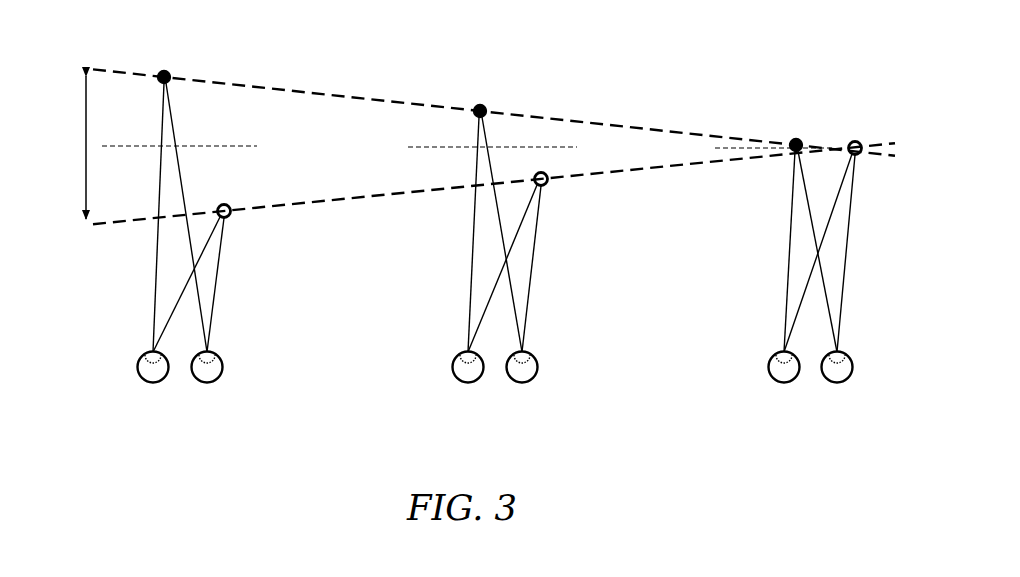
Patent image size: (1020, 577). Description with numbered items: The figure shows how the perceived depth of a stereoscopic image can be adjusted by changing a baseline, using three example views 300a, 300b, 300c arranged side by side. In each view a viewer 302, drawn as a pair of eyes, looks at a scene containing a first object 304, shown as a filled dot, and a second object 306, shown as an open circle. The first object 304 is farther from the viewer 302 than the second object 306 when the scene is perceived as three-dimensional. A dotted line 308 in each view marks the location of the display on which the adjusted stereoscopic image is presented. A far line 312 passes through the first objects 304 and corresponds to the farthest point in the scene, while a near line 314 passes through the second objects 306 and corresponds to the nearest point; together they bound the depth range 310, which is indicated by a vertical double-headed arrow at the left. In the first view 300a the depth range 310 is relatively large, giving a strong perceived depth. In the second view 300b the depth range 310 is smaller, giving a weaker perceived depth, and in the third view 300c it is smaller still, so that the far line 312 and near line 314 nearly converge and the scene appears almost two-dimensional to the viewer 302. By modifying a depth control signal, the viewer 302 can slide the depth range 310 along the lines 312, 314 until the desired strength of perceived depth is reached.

The first view 300a is at (175, 407).
The second view 300b is at (488, 407).
The third view 300c is at (817, 410).
The viewer 302 is at (127, 366).
The first object 304 is at (167, 72).
The second object 306 is at (232, 216).
The dotted line 308 is at (133, 148).
The depth range 310 is at (84, 125).
The far line 312 is at (378, 98).
The near line 314 is at (405, 193).